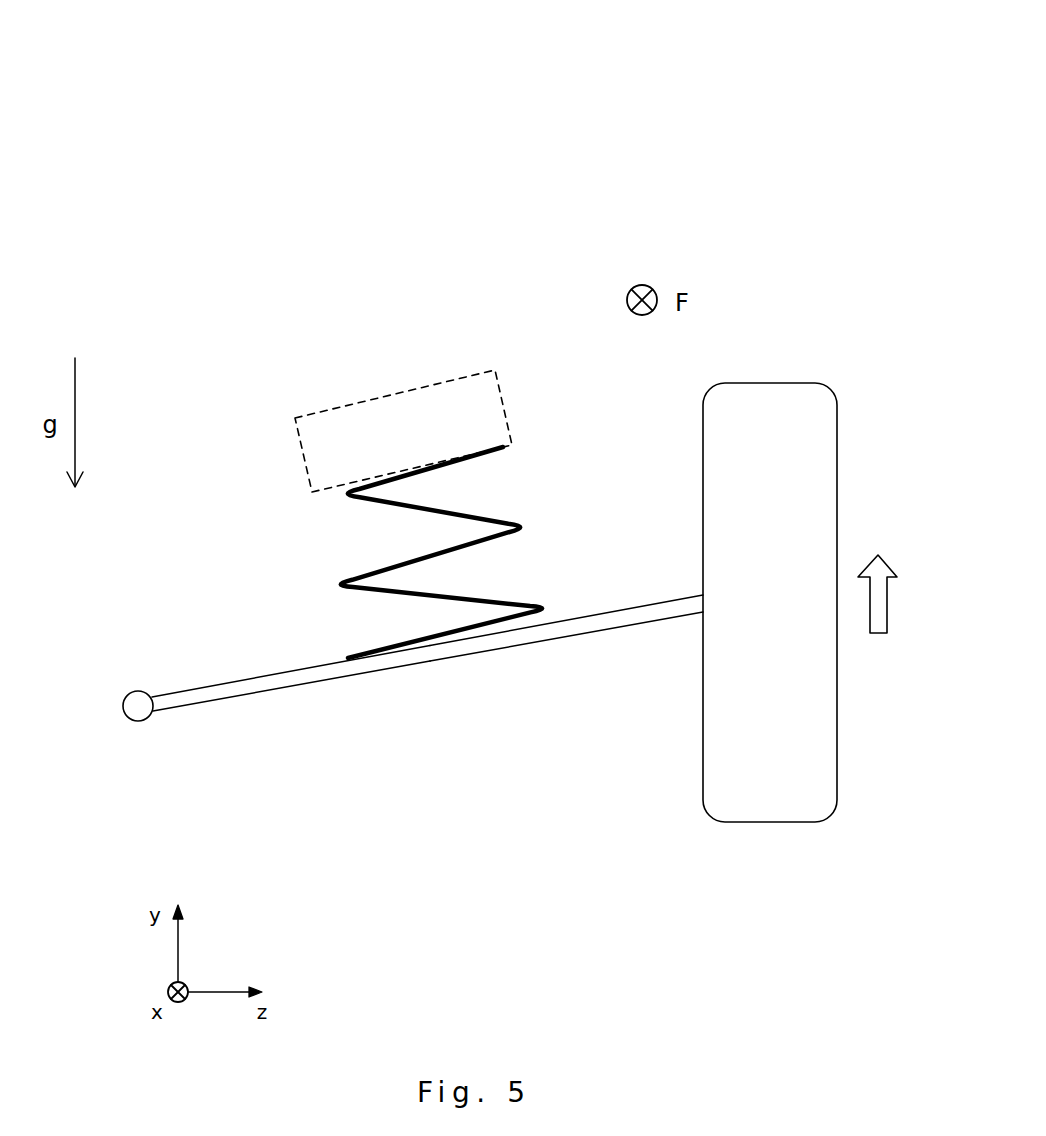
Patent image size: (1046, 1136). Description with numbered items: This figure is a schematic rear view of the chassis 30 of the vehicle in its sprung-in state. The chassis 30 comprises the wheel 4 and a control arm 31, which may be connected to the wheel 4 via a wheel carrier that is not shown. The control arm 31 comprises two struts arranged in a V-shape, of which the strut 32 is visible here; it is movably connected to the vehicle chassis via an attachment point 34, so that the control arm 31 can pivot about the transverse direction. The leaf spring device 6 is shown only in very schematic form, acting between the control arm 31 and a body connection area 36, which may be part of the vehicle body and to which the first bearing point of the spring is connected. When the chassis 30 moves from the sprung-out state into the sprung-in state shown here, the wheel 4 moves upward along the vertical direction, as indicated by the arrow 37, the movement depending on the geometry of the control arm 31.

The chassis 30 is at (432, 130).
The body connection area 36 is at (326, 410).
The leaf spring device 6 is at (515, 517).
The control arm 31 is at (248, 706).
The strut 32 is at (612, 628).
The attachment point 34 is at (138, 722).
The wheel 4 is at (765, 823).
The arrow 37 is at (887, 600).